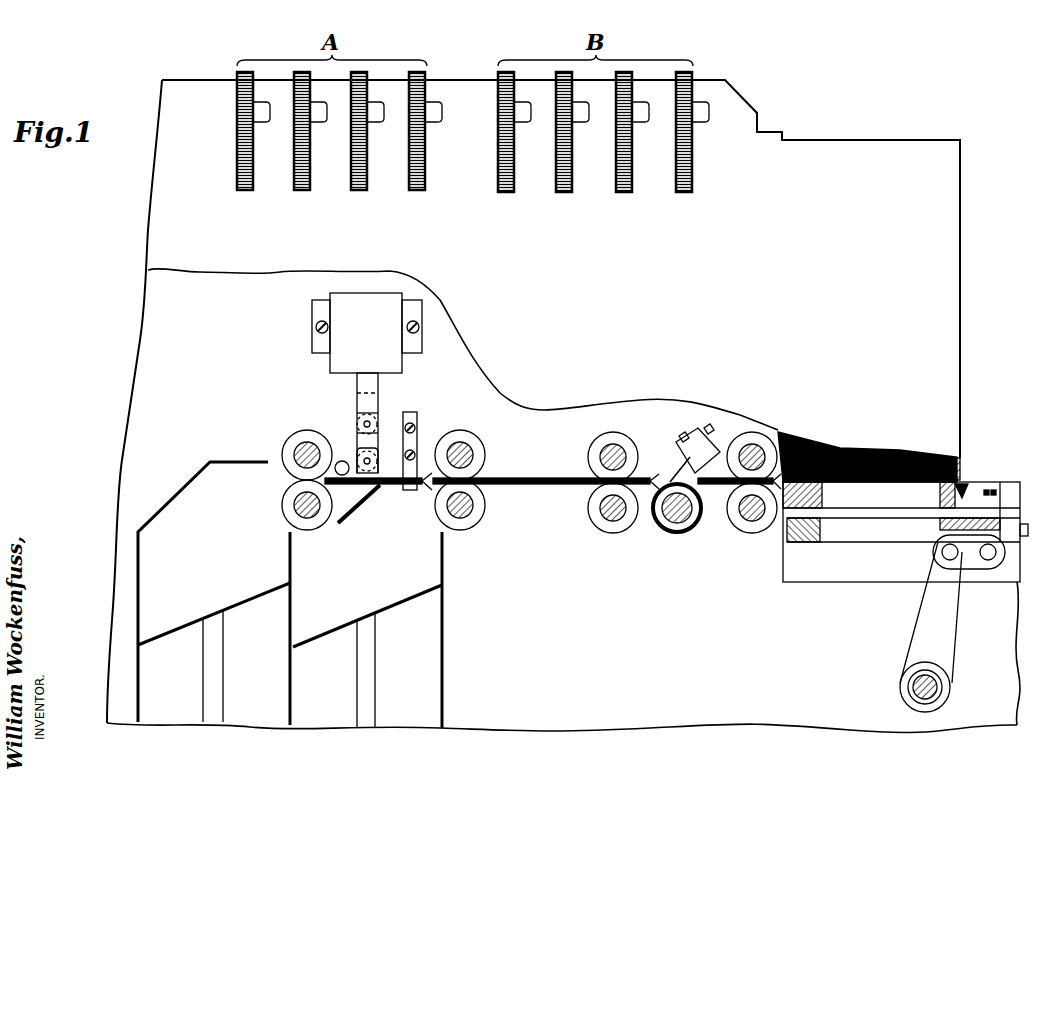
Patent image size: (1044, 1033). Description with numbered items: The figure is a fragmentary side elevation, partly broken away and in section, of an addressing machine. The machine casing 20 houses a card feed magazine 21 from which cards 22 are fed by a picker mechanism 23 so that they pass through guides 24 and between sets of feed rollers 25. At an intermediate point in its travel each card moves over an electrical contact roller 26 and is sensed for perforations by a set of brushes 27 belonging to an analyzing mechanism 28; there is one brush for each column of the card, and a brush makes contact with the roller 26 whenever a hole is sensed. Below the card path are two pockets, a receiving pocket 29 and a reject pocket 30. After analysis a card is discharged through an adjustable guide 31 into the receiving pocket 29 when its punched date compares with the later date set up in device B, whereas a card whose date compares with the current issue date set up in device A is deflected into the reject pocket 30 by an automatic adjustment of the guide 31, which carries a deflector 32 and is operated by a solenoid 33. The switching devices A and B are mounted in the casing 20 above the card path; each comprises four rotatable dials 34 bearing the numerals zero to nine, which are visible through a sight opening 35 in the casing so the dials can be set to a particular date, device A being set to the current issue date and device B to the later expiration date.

The machine casing 20 is at (740, 725).
The card feed magazine 21 is at (962, 466).
The cards 22 is at (870, 456).
The picker mechanism 23 is at (974, 490).
The guides 24 is at (528, 478).
The feed rollers 25 is at (296, 442).
The electrical contact roller 26 is at (676, 532).
The brushes 27 is at (676, 468).
The analyzing mechanism 28 is at (680, 437).
The receiving pocket 29 is at (160, 582).
The reject pocket 30 is at (430, 568).
The adjustable guide 31 is at (404, 492).
The deflector 32 is at (350, 513).
The solenoid 33 is at (392, 364).
The rotatable dials 34 is at (294, 190).
The sight opening 35 is at (262, 122).